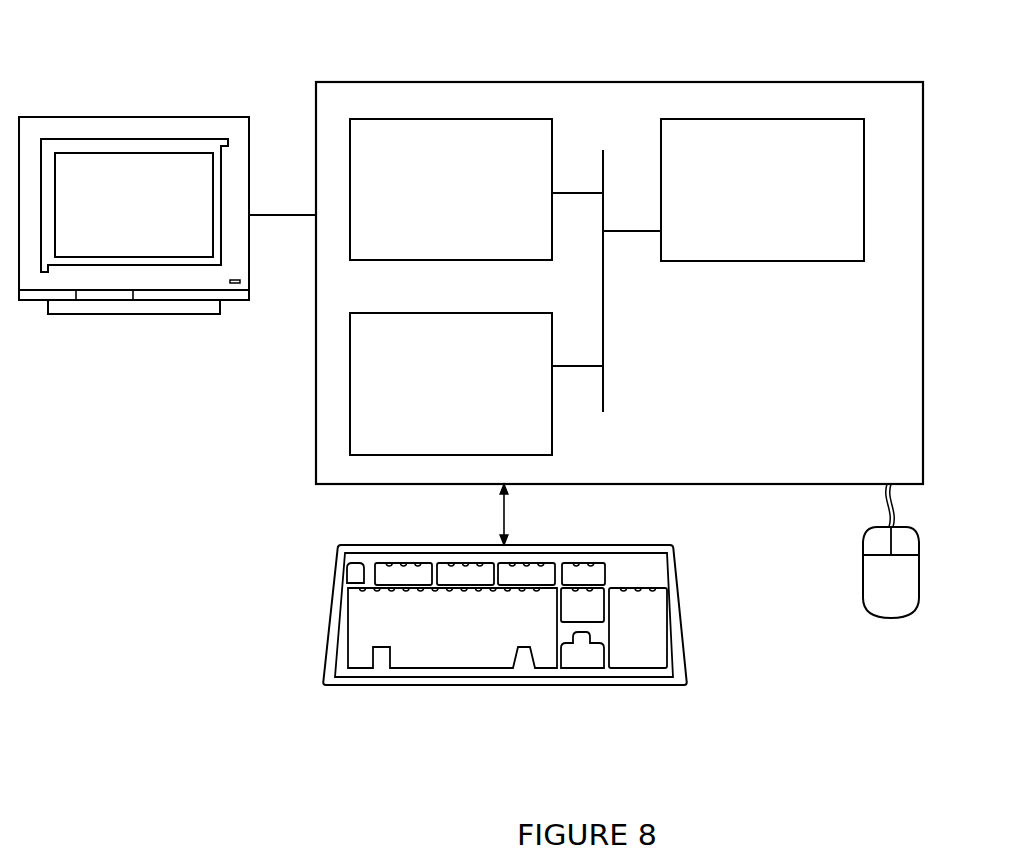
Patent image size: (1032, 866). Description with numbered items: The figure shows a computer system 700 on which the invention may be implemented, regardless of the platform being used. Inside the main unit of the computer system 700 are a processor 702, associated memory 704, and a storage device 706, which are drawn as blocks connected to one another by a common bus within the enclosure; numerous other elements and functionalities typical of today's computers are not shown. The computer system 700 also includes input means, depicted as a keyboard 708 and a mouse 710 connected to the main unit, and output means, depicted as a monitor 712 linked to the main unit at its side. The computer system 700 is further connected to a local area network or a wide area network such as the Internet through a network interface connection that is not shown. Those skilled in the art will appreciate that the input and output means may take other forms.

The computer system 700 is at (648, 40).
The processor 702 is at (771, 204).
The associated memory 704 is at (470, 200).
The storage device 706 is at (468, 396).
The keyboard 708 is at (467, 640).
The mouse 710 is at (909, 592).
The monitor 712 is at (150, 220).